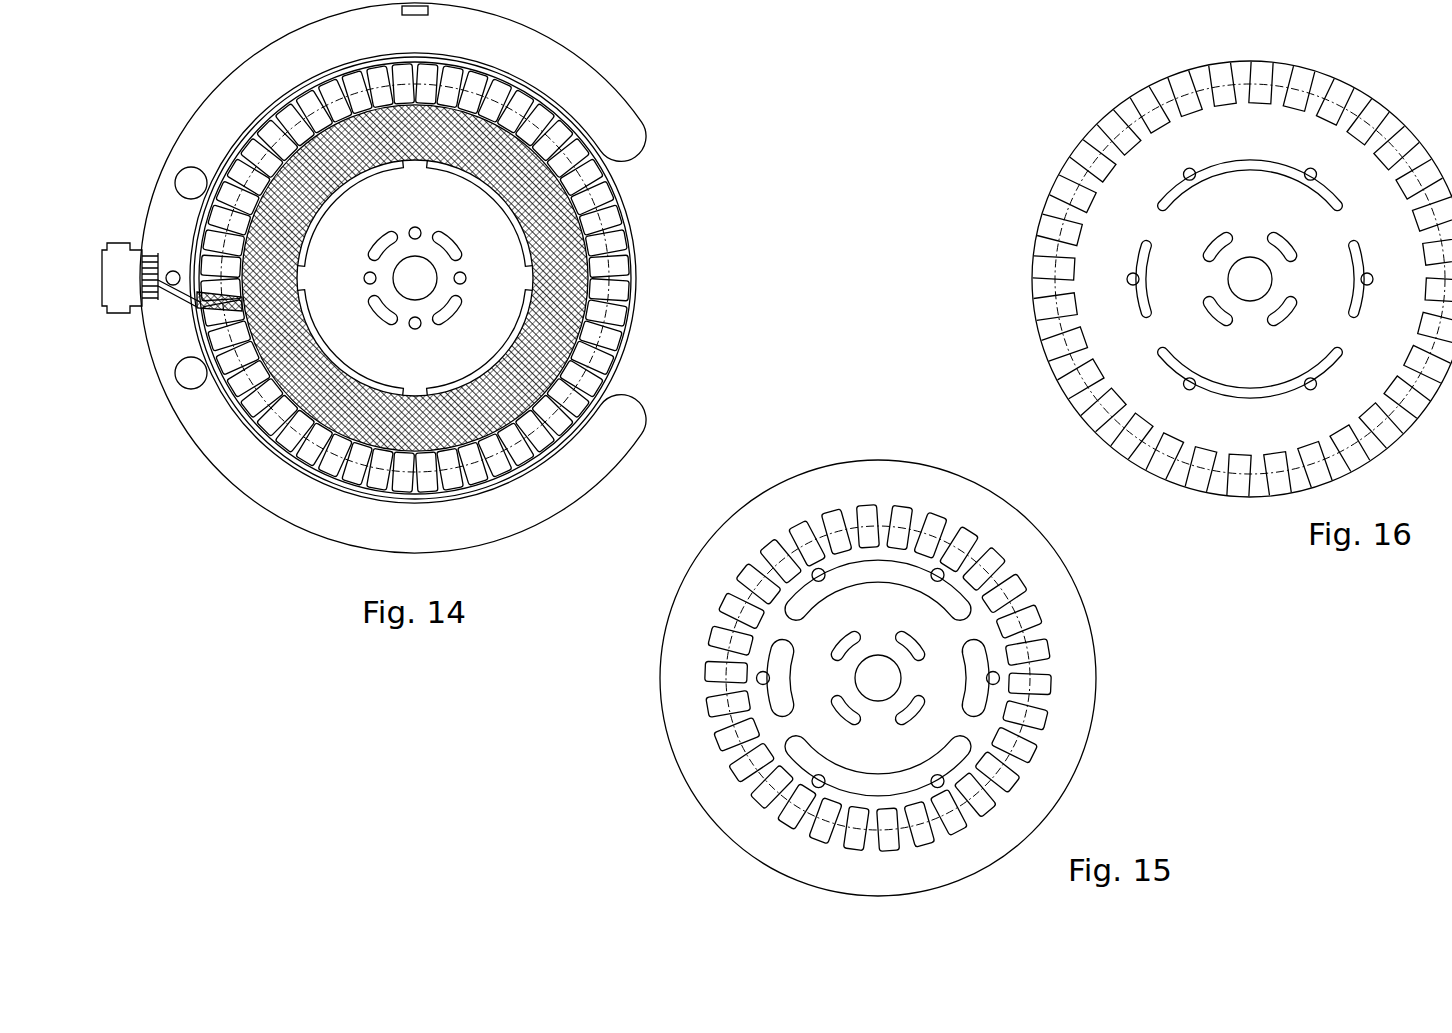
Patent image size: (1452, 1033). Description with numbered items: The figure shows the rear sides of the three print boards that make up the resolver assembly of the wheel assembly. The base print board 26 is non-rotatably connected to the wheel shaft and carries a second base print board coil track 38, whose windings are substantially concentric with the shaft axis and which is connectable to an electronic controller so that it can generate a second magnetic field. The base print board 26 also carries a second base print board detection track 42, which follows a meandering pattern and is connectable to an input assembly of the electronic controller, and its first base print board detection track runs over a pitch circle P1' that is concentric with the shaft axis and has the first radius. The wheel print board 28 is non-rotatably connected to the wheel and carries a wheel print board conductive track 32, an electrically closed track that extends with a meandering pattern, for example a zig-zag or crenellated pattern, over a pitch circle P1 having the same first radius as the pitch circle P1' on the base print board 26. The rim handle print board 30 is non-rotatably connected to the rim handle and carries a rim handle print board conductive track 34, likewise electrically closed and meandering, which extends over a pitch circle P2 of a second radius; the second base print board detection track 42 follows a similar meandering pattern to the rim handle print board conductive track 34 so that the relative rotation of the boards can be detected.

In FIG. 14, the base print board 26 is at (664, 94).
In FIG. 14, the second base print board coil track 38 is at (545, 184).
In FIG. 14, the second base print board detection track 42 is at (611, 220).
In FIG. 14, the pitch circle P1' is at (653, 274).
In FIG. 16, the wheel print board 28 is at (1073, 100).
In FIG. 16, the wheel print board conductive track 32 is at (1063, 139).
In FIG. 16, the pitch circle P1 is at (1006, 277).
In FIG. 15, the rim handle print board 30 is at (1124, 640).
In FIG. 15, the rim handle print board conductive track 34 is at (1050, 686).
In FIG. 15, the pitch circle P2 is at (710, 686).